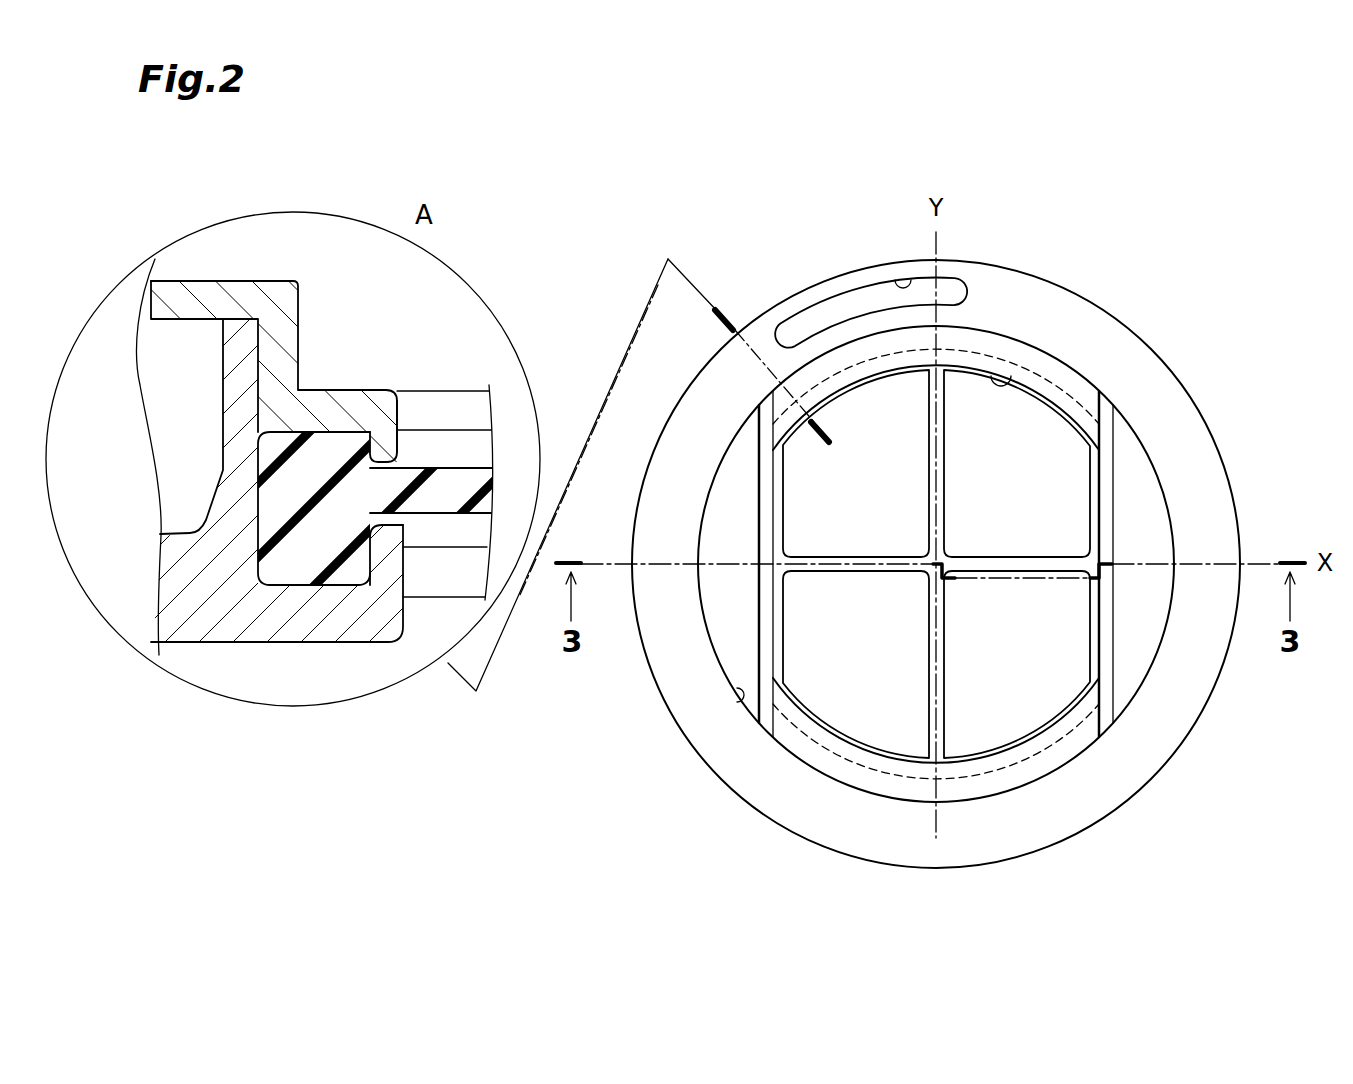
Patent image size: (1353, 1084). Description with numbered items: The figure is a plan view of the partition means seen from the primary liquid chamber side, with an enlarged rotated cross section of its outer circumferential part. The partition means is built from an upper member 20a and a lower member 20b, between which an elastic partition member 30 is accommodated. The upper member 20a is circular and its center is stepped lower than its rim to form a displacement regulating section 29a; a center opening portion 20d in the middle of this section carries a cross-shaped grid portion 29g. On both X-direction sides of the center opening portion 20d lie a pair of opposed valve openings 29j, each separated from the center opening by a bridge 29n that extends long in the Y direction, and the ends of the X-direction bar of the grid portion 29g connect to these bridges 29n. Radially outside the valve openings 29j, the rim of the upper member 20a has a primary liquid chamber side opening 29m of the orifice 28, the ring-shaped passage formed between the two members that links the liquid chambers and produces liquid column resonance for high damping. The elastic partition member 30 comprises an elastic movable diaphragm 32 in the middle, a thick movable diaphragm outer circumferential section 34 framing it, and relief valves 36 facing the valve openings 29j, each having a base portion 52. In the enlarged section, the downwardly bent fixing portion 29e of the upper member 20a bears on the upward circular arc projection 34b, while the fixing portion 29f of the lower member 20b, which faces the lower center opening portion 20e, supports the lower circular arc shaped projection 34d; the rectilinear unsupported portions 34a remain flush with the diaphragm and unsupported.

The upper member 20a is at (296, 293).
The lower member 20b is at (283, 619).
The center opening portion 20d is at (445, 405).
The center opening portion 20e is at (435, 572).
The orifice 28 is at (190, 353).
The displacement regulating section 29a is at (847, 360).
The fixing portion 29e is at (393, 452).
The fixing portion 29f is at (402, 538).
The grid portion 29g is at (1015, 563).
The valve opening 29j is at (758, 729).
The primary liquid chamber side opening 29m is at (905, 285).
The bridge 29n is at (745, 690).
The elastic partition member 30 is at (868, 702).
The elastic movable diaphragm 32 is at (487, 498).
The movable diaphragm outer circumferential section 34 is at (298, 500).
The unsupported portion 34a is at (765, 525).
The upward circular arc projection 34b is at (327, 440).
The lower circular arc shaped projection 34d is at (350, 585).
The relief valve 36 is at (780, 631).
The base portion 52 is at (755, 475).